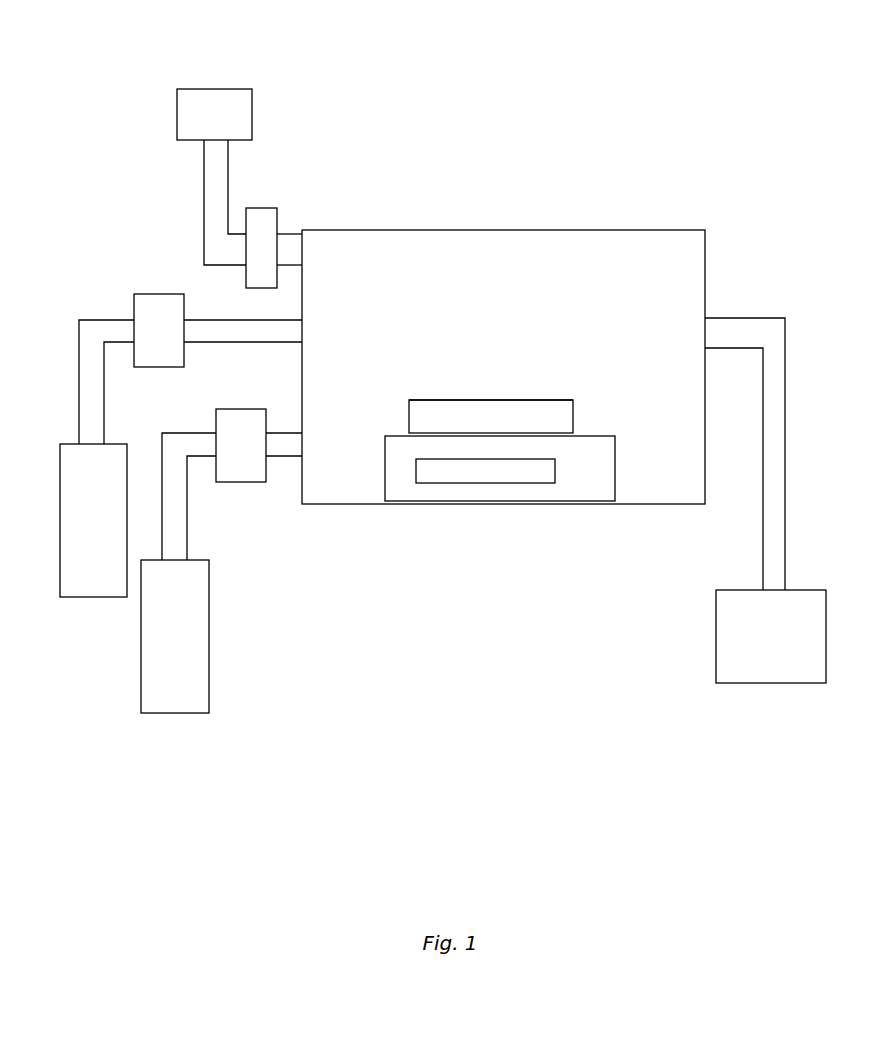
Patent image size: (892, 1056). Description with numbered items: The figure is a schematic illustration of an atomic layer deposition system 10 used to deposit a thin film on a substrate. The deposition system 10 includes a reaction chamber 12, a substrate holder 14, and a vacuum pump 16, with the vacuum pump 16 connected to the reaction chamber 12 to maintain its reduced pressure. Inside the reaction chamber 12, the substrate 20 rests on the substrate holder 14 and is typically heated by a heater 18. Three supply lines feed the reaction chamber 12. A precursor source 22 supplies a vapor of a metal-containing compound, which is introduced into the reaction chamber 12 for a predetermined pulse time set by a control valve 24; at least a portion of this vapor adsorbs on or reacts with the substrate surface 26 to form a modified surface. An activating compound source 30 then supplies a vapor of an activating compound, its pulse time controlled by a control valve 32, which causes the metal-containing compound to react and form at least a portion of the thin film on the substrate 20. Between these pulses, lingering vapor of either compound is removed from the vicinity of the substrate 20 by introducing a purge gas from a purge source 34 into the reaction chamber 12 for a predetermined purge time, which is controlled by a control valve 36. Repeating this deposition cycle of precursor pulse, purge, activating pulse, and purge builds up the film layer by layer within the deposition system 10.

The deposition system 10 is at (688, 170).
The reaction chamber 12 is at (532, 228).
The substrate holder 14 is at (598, 445).
The vacuum pump 16 is at (718, 639).
The heater 18 is at (448, 485).
The substrate 20 is at (439, 412).
The precursor source 22 is at (80, 581).
The control valve 24 is at (162, 296).
The substrate surface 26 is at (501, 403).
The activating compound source 30 is at (197, 652).
The control valve 32 is at (249, 479).
The purge source 34 is at (207, 97).
The control valve 36 is at (256, 205).